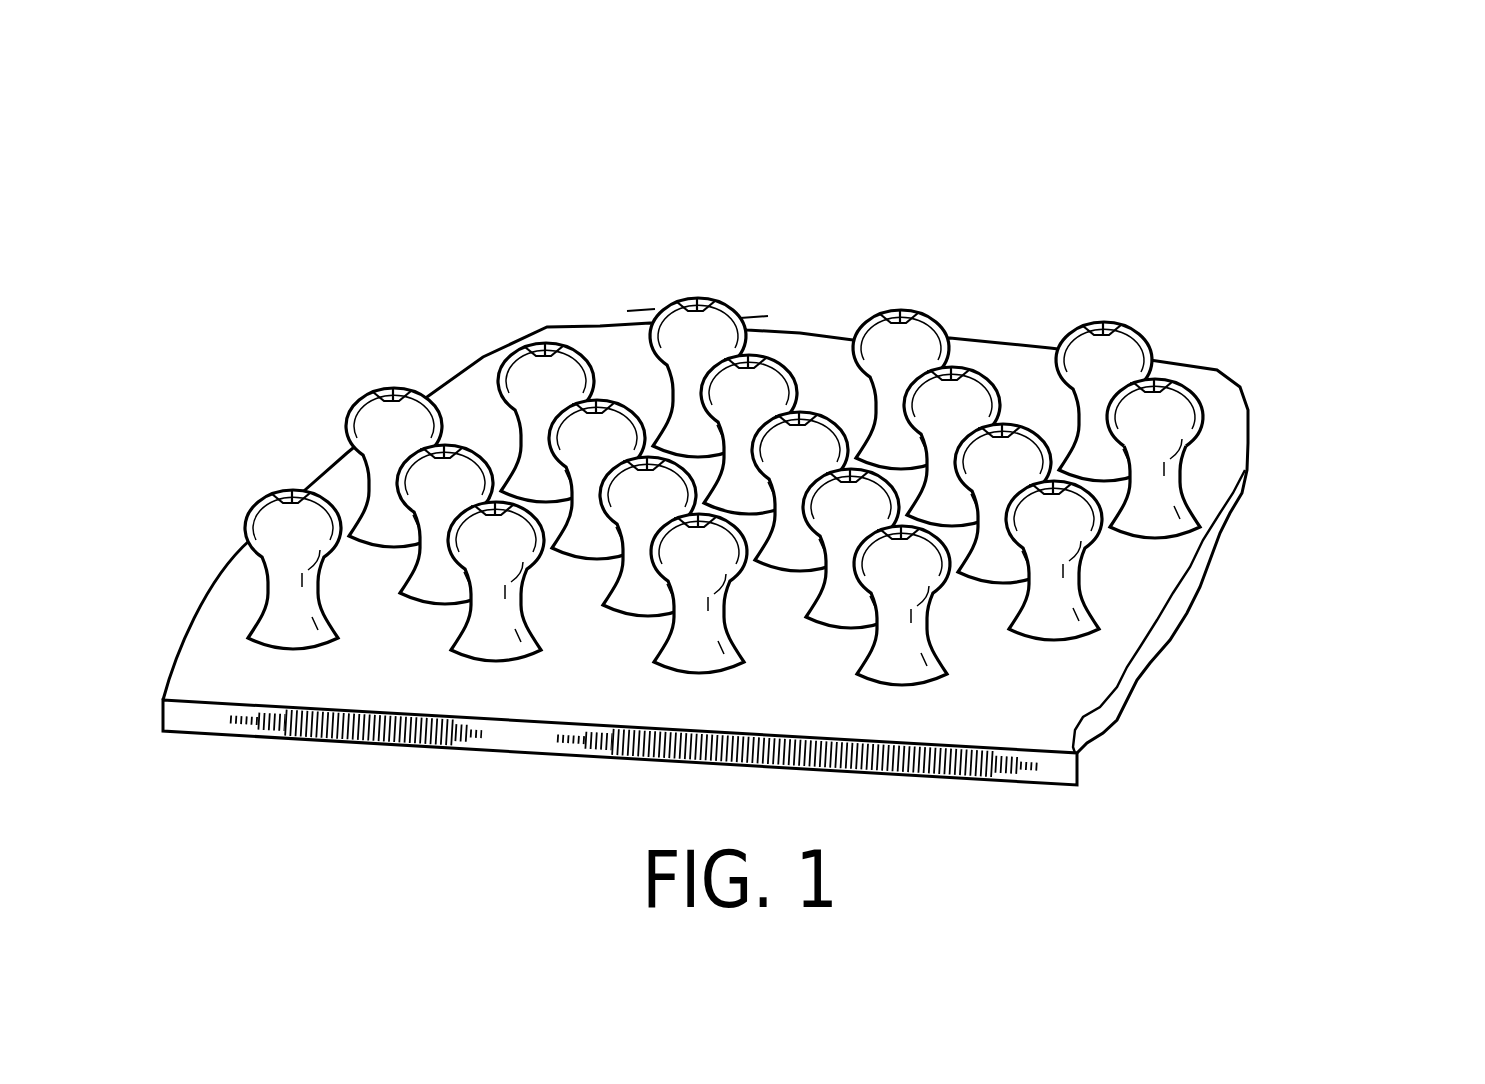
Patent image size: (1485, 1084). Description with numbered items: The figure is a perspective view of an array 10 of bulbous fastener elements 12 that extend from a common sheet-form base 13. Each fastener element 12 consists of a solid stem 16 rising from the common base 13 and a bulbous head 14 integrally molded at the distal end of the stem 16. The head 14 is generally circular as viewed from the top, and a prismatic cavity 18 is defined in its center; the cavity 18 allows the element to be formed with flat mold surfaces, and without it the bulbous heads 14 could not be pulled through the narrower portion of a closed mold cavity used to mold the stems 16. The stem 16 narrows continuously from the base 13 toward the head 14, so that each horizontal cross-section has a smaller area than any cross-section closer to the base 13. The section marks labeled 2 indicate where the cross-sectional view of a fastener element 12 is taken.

The array 10 is at (819, 475).
The fastener element 12 is at (788, 462).
The common sheet-form base 13 is at (1023, 713).
The head 14 is at (1180, 419).
The stem 16 is at (1170, 481).
The prismatic cavity 18 is at (1097, 318).
The section line 2- 2 is at (800, 277).